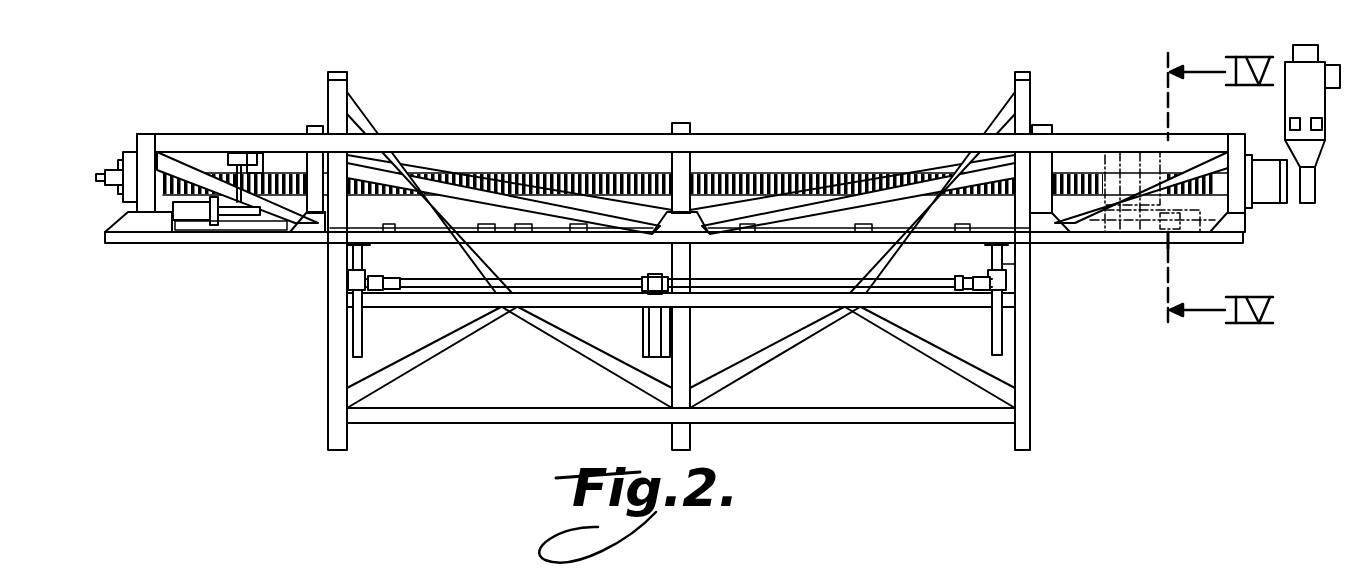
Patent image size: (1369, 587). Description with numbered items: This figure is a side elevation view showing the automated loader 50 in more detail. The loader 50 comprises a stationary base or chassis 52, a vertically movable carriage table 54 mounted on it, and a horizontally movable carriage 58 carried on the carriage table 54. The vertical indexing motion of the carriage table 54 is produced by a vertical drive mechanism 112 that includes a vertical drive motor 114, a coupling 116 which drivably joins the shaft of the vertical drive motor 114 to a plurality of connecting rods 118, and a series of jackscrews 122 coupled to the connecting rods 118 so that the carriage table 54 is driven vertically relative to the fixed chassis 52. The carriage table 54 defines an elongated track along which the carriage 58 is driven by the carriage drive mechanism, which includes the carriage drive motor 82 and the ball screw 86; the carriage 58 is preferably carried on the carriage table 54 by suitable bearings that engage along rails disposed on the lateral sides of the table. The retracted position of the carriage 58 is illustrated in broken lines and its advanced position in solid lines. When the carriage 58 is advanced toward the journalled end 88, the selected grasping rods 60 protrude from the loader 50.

The loader 50 is at (477, 122).
The chassis 52 is at (832, 297).
The carriage table 54 is at (752, 235).
The carriage 58 is at (1180, 246).
The grasping rods 60 is at (517, 225).
The carriage drive motor 82 is at (1300, 103).
The ball screw 86 is at (1126, 178).
The journalled end 88 is at (94, 172).
The vertical drive mechanism 112 is at (1003, 264).
The vertical drive motor 114 is at (643, 328).
The coupling 116 is at (657, 277).
The connecting rods 118 is at (453, 280).
The jackscrews 122 is at (350, 278).